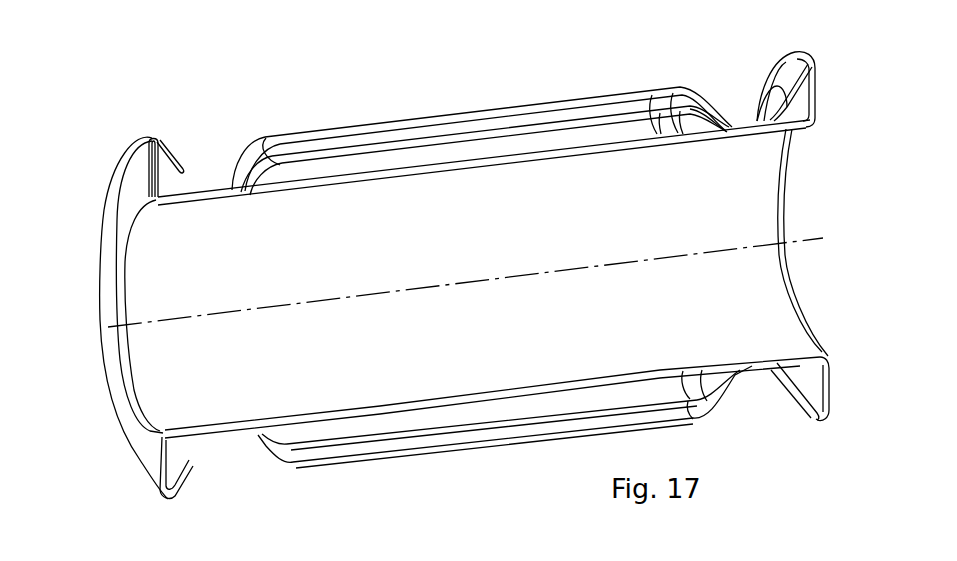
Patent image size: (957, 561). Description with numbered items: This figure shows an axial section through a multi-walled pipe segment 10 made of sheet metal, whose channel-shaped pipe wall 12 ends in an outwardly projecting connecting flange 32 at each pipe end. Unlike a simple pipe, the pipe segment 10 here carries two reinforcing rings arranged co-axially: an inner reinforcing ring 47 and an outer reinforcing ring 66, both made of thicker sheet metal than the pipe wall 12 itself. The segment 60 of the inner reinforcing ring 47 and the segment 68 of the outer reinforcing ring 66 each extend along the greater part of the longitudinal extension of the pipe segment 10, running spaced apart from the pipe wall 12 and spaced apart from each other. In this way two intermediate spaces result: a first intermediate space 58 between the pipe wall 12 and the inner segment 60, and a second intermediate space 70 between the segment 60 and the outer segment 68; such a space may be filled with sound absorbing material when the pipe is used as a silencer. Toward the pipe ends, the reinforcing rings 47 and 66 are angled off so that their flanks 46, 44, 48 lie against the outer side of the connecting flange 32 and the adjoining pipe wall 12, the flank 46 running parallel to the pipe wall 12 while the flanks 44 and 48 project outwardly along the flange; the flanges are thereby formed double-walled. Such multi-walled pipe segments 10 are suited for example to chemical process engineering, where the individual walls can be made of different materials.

The pipe segment 10 is at (484, 180).
The pipe wall 12 is at (500, 171).
The connecting flange 32 is at (466, 272).
The outwardly projecting flank 44 is at (162, 185).
The flank running parallel to the pipe wall 46 is at (175, 202).
The inner reinforcing ring 47 is at (711, 113).
The flank 48 is at (164, 147).
The intermediate space 58 is at (537, 145).
The segment of the reinforcing ring 60 is at (455, 135).
The outer reinforcing ring 66 is at (666, 93).
The segment of the outer reinforcing ring 68 is at (393, 123).
The intermediate space 70 is at (581, 114).